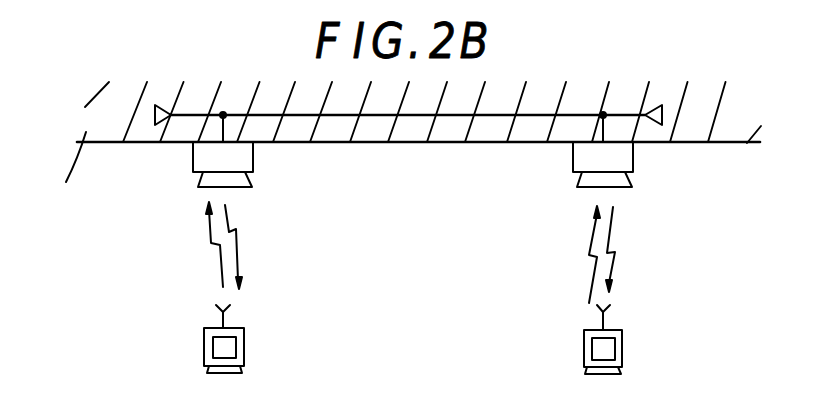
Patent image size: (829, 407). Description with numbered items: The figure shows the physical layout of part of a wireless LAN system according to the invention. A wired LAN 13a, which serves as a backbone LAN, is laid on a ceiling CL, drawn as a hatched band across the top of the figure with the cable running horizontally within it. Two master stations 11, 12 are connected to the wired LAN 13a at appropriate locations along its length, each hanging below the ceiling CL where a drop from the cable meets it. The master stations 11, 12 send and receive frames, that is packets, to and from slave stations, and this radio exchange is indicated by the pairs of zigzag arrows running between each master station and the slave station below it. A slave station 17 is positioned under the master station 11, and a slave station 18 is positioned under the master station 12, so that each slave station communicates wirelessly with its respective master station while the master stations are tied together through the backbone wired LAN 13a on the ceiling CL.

The master station 11 is at (198, 160).
The master station 12 is at (590, 160).
The wired LAN 13a is at (466, 116).
The slave station 17 is at (245, 328).
The slave station 18 is at (583, 338).
The ceiling CL is at (65, 176).